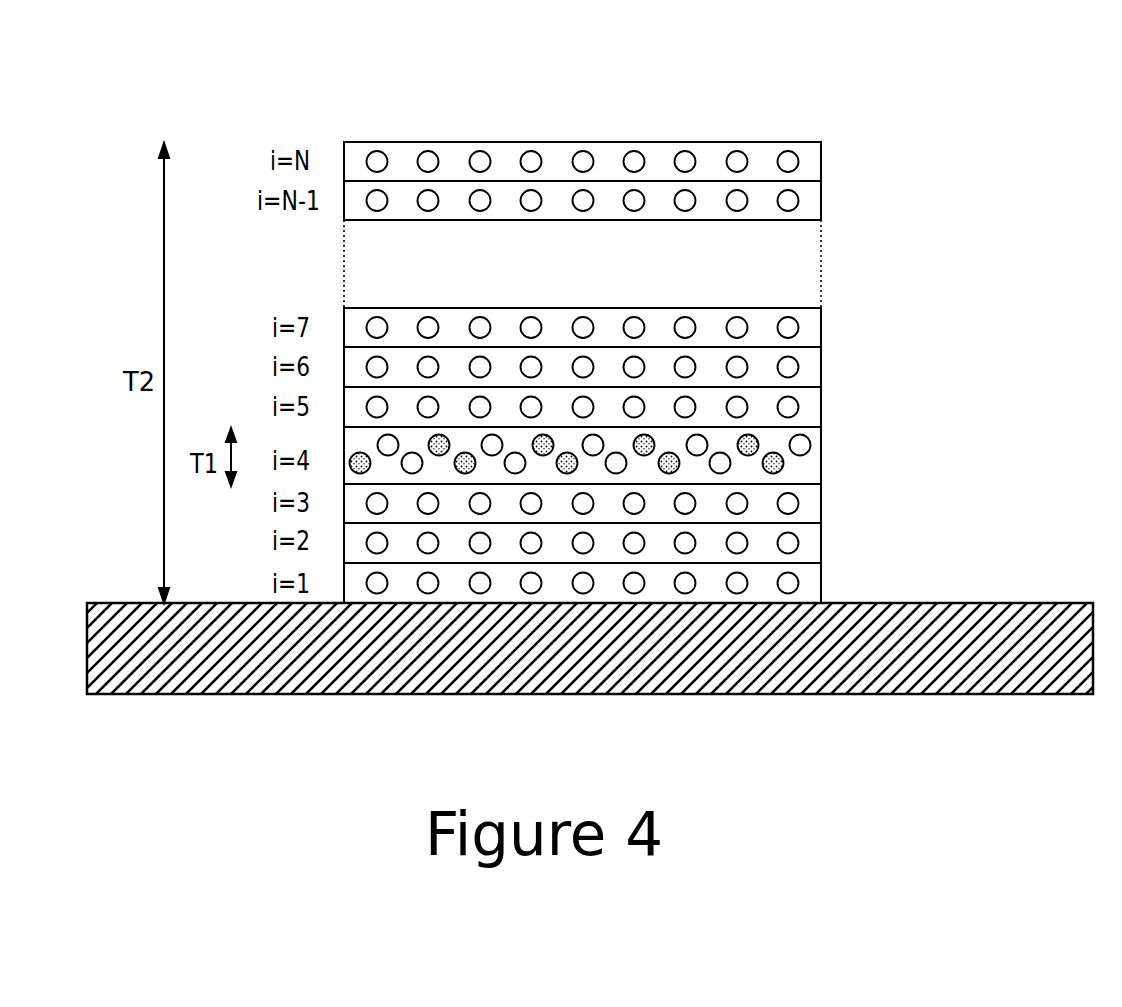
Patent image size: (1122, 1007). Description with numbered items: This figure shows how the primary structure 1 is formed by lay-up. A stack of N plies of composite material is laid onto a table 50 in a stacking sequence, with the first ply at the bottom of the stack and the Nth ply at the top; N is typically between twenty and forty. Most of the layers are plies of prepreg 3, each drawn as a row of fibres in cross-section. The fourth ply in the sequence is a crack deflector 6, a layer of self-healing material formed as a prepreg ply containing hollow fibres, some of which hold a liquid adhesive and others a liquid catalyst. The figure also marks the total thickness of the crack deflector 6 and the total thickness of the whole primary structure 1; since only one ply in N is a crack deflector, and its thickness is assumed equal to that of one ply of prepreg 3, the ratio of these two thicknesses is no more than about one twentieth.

The primary structure 1 is at (497, 93).
The plies of prepreg 3 is at (812, 165).
The crack deflector 6 is at (813, 463).
The table 50 is at (942, 603).